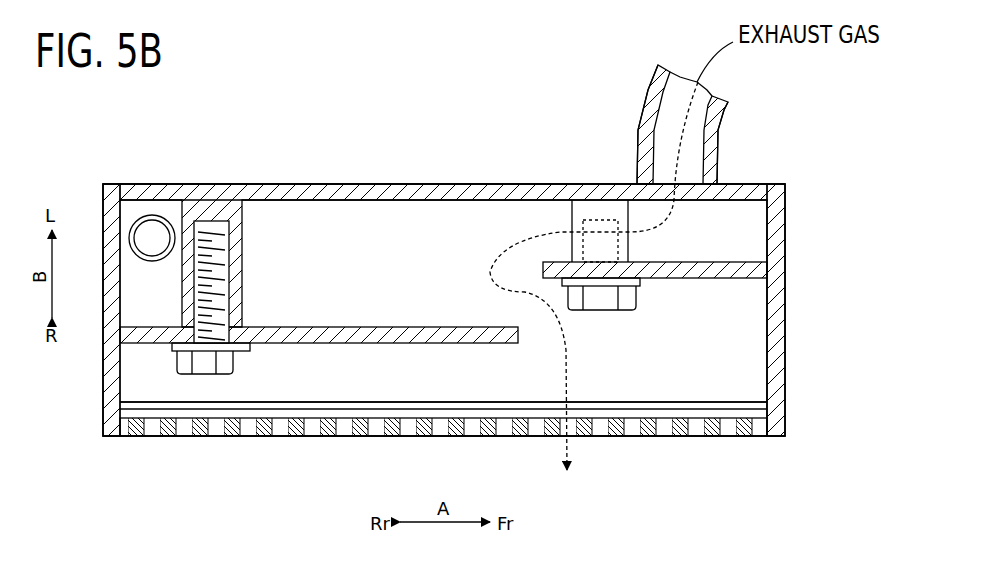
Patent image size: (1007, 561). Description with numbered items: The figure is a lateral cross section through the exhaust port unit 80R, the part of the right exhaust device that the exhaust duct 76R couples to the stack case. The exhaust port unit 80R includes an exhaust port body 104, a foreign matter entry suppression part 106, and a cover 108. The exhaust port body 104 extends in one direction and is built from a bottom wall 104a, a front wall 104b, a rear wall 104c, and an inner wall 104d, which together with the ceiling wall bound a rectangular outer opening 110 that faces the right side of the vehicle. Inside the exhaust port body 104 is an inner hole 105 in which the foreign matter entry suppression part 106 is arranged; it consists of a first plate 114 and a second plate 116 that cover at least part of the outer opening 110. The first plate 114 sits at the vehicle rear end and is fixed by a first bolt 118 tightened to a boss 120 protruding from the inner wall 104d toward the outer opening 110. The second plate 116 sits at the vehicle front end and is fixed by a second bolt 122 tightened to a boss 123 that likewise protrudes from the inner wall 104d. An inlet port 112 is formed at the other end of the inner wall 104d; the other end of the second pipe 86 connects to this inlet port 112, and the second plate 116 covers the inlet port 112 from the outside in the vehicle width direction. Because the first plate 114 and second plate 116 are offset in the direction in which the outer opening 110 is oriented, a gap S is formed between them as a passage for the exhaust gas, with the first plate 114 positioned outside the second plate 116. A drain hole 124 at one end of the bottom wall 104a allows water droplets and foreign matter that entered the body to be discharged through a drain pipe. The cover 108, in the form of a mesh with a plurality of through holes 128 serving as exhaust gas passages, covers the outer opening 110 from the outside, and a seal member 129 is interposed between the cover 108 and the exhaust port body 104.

The exhaust port unit 80R is at (114, 172).
The exhaust port body 104 is at (200, 182).
The bottom wall 104a is at (743, 357).
The front wall 104b is at (787, 314).
The rear wall 104c is at (102, 382).
The inner wall 104d is at (325, 184).
The inner hole 105 is at (420, 218).
The drain hole 124 is at (152, 235).
The first plate 114 is at (452, 344).
The boss 120 is at (243, 290).
The first bolt 118 is at (236, 362).
The second pipe 86 is at (642, 117).
The exhaust duct 76R is at (650, 82).
The gap S is at (512, 289).
The inlet port 112 is at (693, 202).
The boss 123 is at (583, 232).
The second plate 116 is at (675, 279).
The second bolt 122 is at (616, 312).
The through holes 128 is at (703, 427).
The cover 108 is at (633, 434).
The seal member 129 is at (785, 407).
The outer opening 110 is at (290, 406).
The foreign matter entry suppression part 106 is at (373, 385).